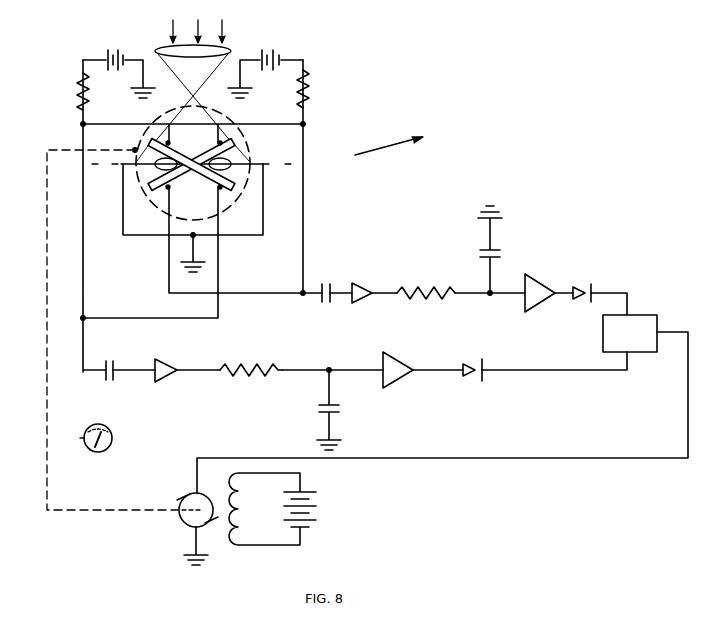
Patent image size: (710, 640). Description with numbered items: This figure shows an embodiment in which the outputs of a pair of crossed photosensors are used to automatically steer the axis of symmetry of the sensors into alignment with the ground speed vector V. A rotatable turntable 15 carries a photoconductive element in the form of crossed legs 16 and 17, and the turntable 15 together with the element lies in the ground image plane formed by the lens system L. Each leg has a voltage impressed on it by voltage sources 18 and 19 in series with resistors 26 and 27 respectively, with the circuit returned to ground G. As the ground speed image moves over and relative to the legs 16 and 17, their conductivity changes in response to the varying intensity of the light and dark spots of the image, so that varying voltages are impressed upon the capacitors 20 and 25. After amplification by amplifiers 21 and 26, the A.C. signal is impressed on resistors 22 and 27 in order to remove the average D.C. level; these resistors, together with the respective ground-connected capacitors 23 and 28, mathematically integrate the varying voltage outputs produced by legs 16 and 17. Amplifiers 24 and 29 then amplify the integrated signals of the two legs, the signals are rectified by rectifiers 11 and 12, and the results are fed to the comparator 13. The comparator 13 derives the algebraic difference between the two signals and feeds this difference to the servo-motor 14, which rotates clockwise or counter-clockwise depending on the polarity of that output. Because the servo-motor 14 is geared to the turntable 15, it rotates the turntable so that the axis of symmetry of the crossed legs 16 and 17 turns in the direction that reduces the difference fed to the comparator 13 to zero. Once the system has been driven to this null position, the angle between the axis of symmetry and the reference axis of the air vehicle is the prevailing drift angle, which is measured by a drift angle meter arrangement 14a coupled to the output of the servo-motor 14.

The lens system L is at (199, 81).
The voltage source 18 is at (270, 52).
The voltage source 19 is at (122, 68).
The resistor 27 is at (78, 89).
The resistor 26 is at (305, 91).
The rotatable turntable 15 is at (223, 215).
The crossed leg 16 is at (237, 142).
The crossed leg 17 is at (236, 184).
The ground G is at (195, 258).
The direction of movement V is at (394, 141).
The capacitor 20 is at (322, 290).
The amplifier 21 is at (355, 288).
The resistor 22 is at (404, 294).
The ground-connected capacitor 23 is at (487, 262).
The amplifier 24 is at (539, 282).
The rectifier 11 is at (590, 286).
The comparator 13 is at (643, 320).
The capacitor 25 is at (106, 368).
The amplifier 29 is at (392, 359).
The rectifier 12 is at (473, 366).
The ground-connected capacitor 28 is at (337, 416).
The drift angle meter arrangement 14a is at (110, 431).
The servo-motor 14 is at (185, 486).